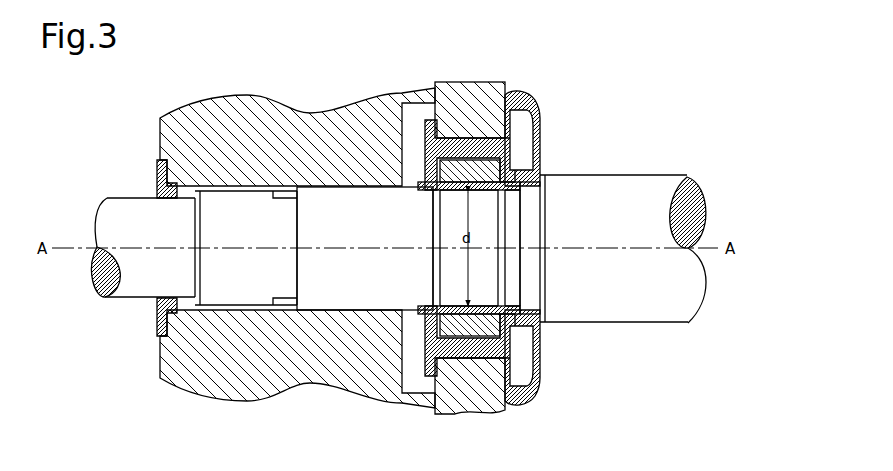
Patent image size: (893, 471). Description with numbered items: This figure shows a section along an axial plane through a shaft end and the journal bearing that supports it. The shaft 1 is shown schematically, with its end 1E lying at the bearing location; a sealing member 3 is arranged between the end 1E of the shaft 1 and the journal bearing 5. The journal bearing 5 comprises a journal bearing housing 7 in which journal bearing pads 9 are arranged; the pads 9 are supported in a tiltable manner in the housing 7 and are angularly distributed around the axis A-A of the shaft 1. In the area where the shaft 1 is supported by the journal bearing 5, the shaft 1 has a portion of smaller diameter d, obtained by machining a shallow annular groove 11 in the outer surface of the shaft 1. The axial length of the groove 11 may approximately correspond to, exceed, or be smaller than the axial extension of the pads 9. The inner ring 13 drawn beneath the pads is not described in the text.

The shaft 1 is at (607, 324).
The end of the shaft 1E is at (157, 306).
The sealing member 3 is at (157, 186).
The journal bearing 5 is at (705, 130).
The journal bearing housing 7 is at (537, 143).
The journal bearing pads 9 is at (537, 170).
The shallow annular groove 11 is at (452, 271).
The inner ring 13 is at (488, 192).